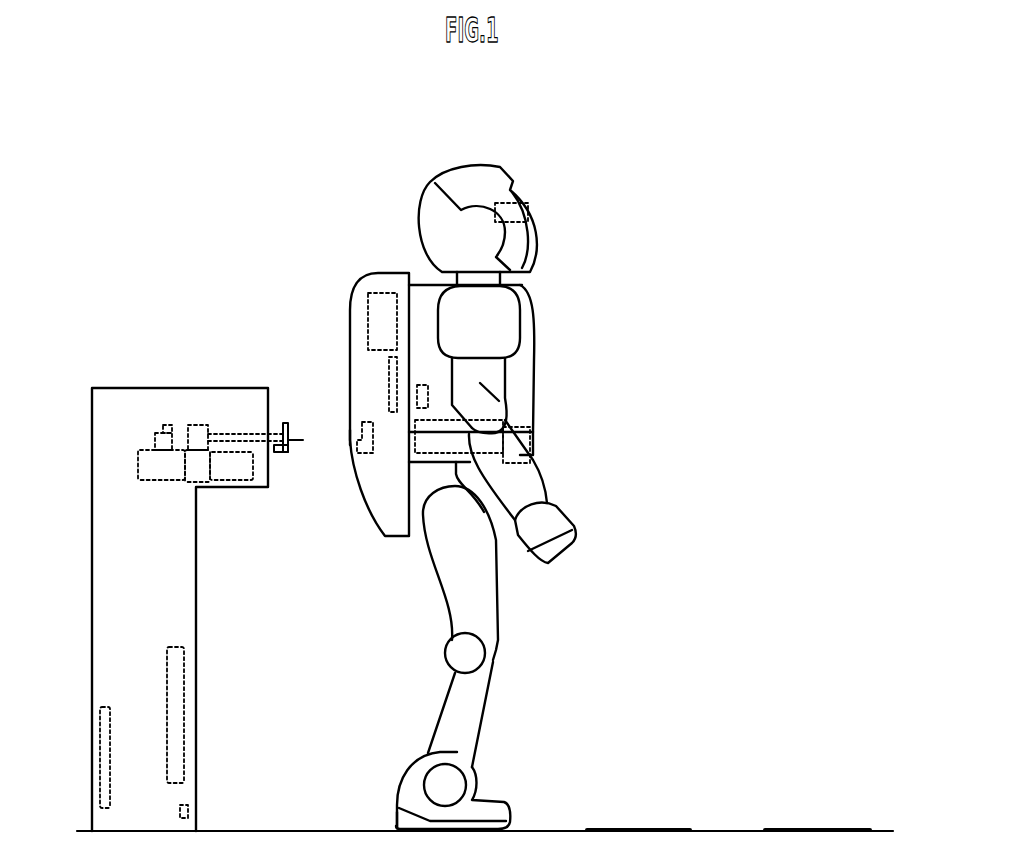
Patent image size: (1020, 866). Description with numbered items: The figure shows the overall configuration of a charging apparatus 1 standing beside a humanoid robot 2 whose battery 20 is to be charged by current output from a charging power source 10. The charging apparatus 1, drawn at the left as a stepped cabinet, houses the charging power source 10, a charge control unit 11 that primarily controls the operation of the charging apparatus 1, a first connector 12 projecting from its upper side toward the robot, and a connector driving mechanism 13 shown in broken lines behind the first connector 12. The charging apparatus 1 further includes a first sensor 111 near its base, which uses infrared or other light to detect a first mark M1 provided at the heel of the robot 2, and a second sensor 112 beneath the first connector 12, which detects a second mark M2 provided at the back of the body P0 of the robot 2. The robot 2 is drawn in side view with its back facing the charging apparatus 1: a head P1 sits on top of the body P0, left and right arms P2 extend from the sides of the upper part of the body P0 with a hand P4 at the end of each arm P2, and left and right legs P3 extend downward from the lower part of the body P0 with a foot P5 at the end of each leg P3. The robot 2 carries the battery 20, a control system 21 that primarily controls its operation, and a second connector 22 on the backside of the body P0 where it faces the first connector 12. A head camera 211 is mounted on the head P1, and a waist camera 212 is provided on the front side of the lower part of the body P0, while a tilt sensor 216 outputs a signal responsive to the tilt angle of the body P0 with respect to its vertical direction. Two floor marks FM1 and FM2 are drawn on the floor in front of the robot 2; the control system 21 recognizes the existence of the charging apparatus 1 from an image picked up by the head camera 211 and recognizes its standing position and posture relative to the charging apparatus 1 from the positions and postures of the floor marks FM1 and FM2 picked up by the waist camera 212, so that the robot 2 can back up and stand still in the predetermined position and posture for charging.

The charging apparatus 1 is at (172, 360).
The charging power source 10 is at (188, 660).
The charge control unit 11 is at (106, 703).
The first sensor 111 is at (190, 802).
The first connector 12 is at (285, 417).
The second sensor 112 is at (278, 460).
The connector driving mechanism 13 is at (178, 423).
The robot 2 is at (623, 202).
The battery 20 is at (363, 300).
The control system 21 is at (387, 377).
The second connector 22 is at (365, 422).
The head camera 211 is at (530, 200).
The waist camera 212 is at (528, 436).
The tilt sensor 216 is at (428, 383).
The body P0 is at (512, 390).
The head P1 is at (508, 198).
The arm P2 is at (513, 416).
The leg P3 is at (507, 640).
The hand P4 is at (573, 513).
The foot P5 is at (508, 805).
The first mark M1 is at (390, 813).
The second mark M2 is at (355, 445).
The floor mark FM1 is at (838, 828).
The floor mark FM2 is at (660, 828).